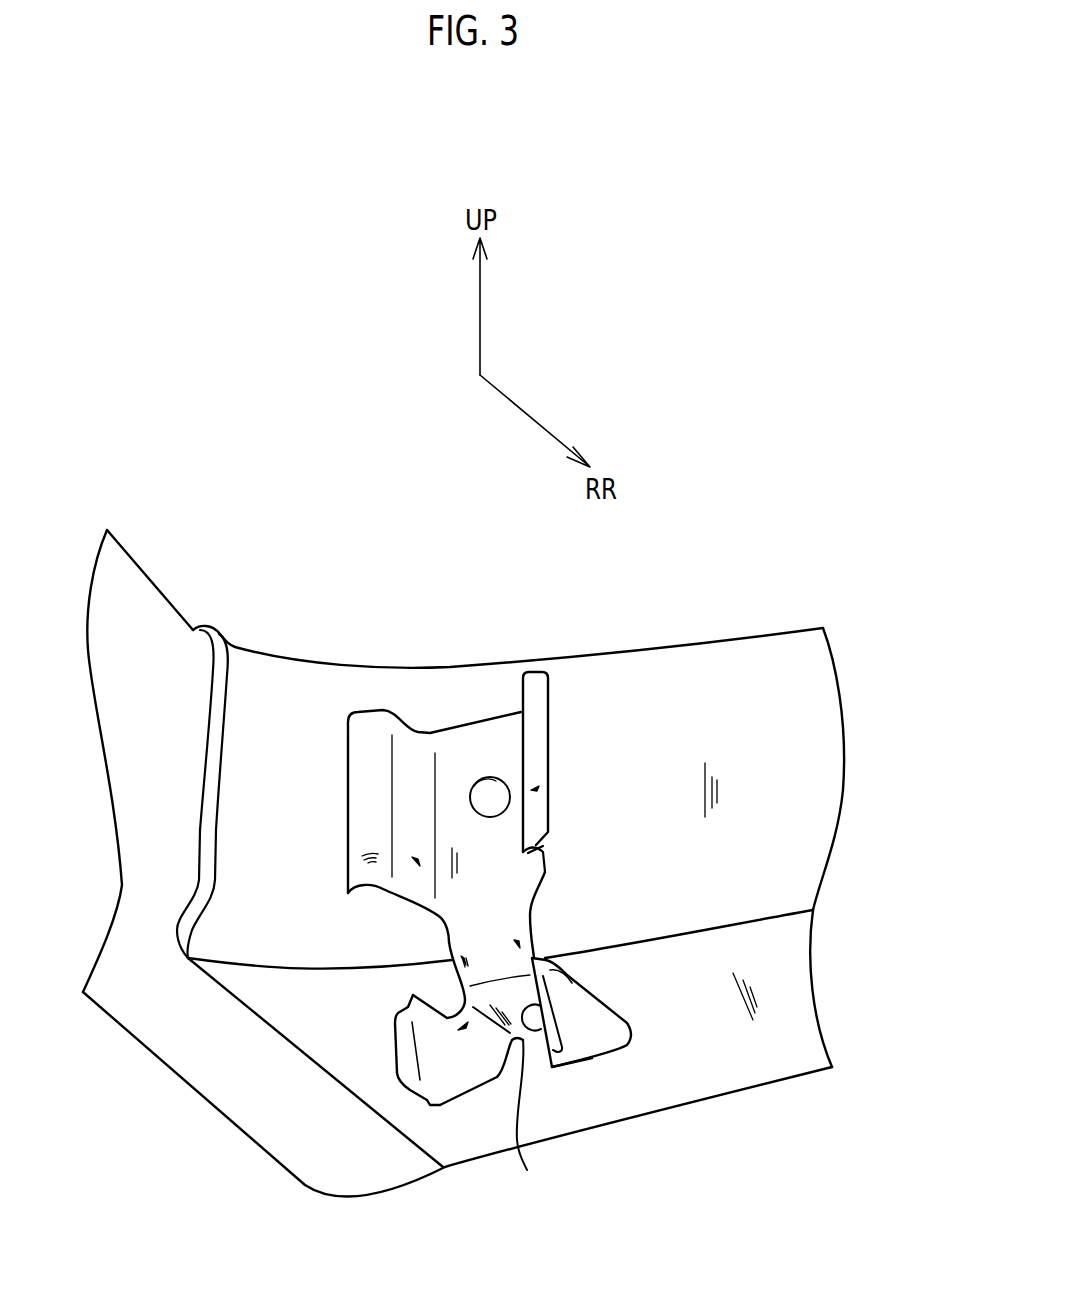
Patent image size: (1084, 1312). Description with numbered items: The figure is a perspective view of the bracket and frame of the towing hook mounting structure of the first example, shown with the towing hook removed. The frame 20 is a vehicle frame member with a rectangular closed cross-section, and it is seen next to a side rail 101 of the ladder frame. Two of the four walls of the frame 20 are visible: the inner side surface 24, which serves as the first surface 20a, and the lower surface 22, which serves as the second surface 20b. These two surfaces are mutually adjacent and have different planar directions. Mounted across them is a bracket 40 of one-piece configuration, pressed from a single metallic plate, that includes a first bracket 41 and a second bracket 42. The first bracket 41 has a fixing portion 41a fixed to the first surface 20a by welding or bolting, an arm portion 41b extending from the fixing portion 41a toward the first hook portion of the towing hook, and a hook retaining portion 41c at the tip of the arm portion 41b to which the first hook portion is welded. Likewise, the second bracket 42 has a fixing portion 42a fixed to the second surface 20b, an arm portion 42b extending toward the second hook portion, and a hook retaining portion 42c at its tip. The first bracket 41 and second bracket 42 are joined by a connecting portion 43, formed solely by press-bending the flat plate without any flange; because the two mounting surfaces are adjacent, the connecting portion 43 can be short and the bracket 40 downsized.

The frame 20 is at (733, 637).
The first surface 20a is at (810, 708).
The second surface 20b is at (798, 1033).
The lower surface 22 is at (807, 1055).
The inner side surface 24 is at (802, 820).
The bracket 40 is at (385, 711).
The first bracket 41 is at (560, 778).
The fixing portion 41a is at (482, 740).
The arm portion 41b is at (543, 857).
The hook retaining portion 41c is at (360, 755).
The second bracket 42 is at (609, 994).
The fixing portion 42a is at (539, 1121).
The arm portion 42b is at (593, 1038).
The hook retaining portion 42c is at (400, 1050).
The connecting portion 43 is at (498, 953).
The side rail 101 is at (118, 993).